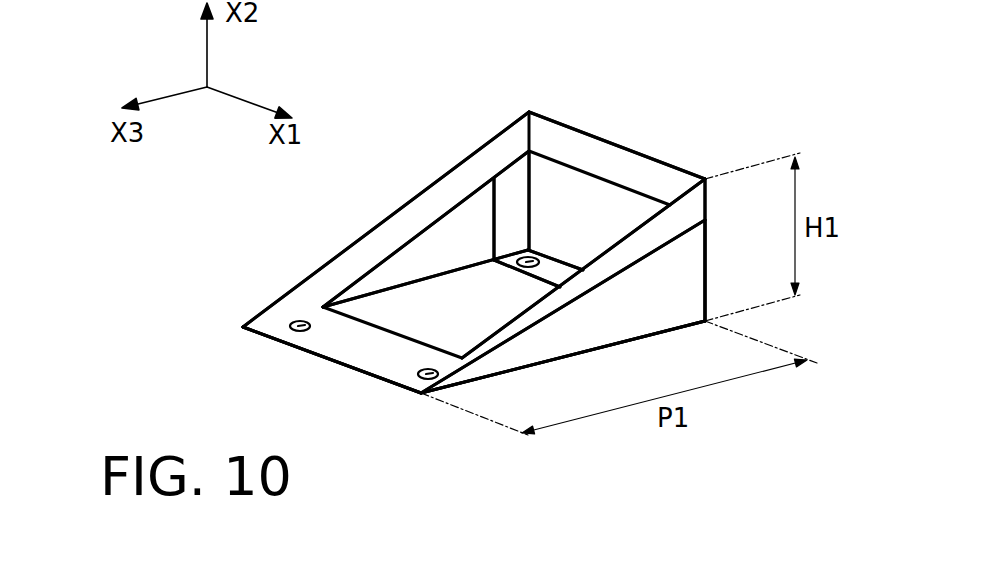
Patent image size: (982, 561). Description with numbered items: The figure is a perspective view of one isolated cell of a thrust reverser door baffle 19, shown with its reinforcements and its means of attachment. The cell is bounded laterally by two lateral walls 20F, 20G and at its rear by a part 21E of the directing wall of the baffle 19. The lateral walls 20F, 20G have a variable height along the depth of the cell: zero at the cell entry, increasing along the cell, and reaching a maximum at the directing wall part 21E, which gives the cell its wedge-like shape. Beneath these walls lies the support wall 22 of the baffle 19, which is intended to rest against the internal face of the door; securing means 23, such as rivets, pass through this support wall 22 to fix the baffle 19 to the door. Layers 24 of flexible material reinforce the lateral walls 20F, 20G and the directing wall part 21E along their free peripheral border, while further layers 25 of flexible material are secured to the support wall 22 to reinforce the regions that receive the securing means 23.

The baffle 19 is at (448, 235).
The lateral wall 20F is at (468, 228).
The lateral wall 20G is at (663, 288).
The part of a directing wall 21E is at (623, 203).
The support wall 22 is at (397, 315).
The securing means 23 is at (533, 257).
The layers of flexible material 24 is at (383, 240).
The layers of flexible material 25 is at (528, 253).